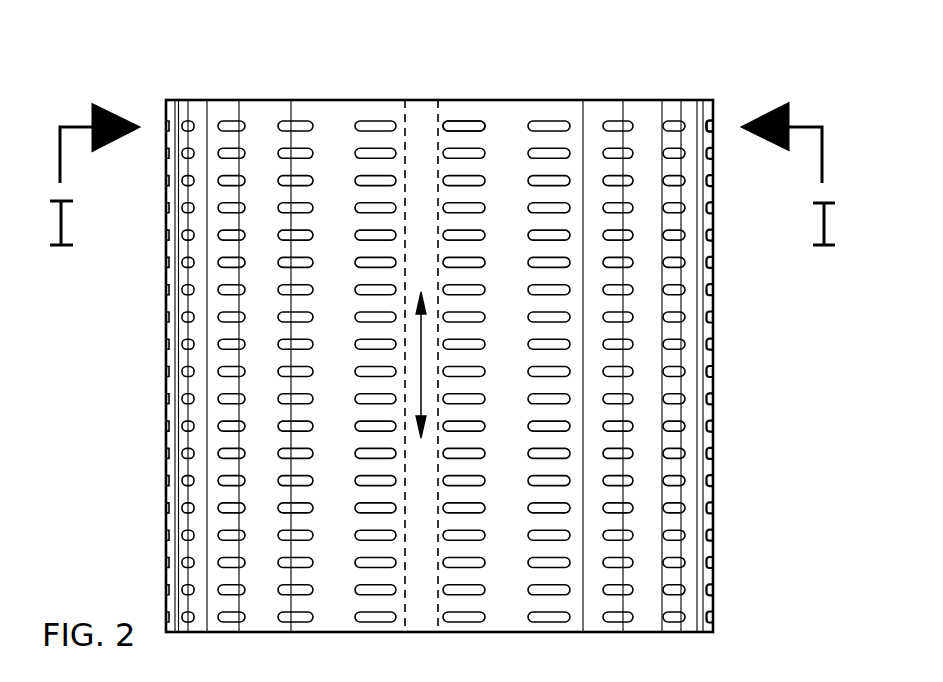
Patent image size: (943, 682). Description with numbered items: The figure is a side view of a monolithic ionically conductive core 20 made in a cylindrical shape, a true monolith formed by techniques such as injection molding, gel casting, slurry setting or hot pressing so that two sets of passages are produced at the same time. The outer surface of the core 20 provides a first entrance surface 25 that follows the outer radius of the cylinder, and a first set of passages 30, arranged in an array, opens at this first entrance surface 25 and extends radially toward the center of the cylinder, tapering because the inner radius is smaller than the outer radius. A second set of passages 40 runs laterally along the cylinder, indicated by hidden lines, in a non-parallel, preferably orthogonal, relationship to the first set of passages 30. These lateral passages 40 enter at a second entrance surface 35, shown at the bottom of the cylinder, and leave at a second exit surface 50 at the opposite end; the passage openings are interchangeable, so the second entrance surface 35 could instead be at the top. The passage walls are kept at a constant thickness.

The monolithic ionically conductive core 20 is at (538, 115).
The first entrance surface 25 is at (453, 123).
The first set of passages 30 is at (468, 123).
The second entrance surface 35 is at (413, 632).
The second set of passages 40 is at (420, 592).
The second exit surface 50 is at (420, 100).